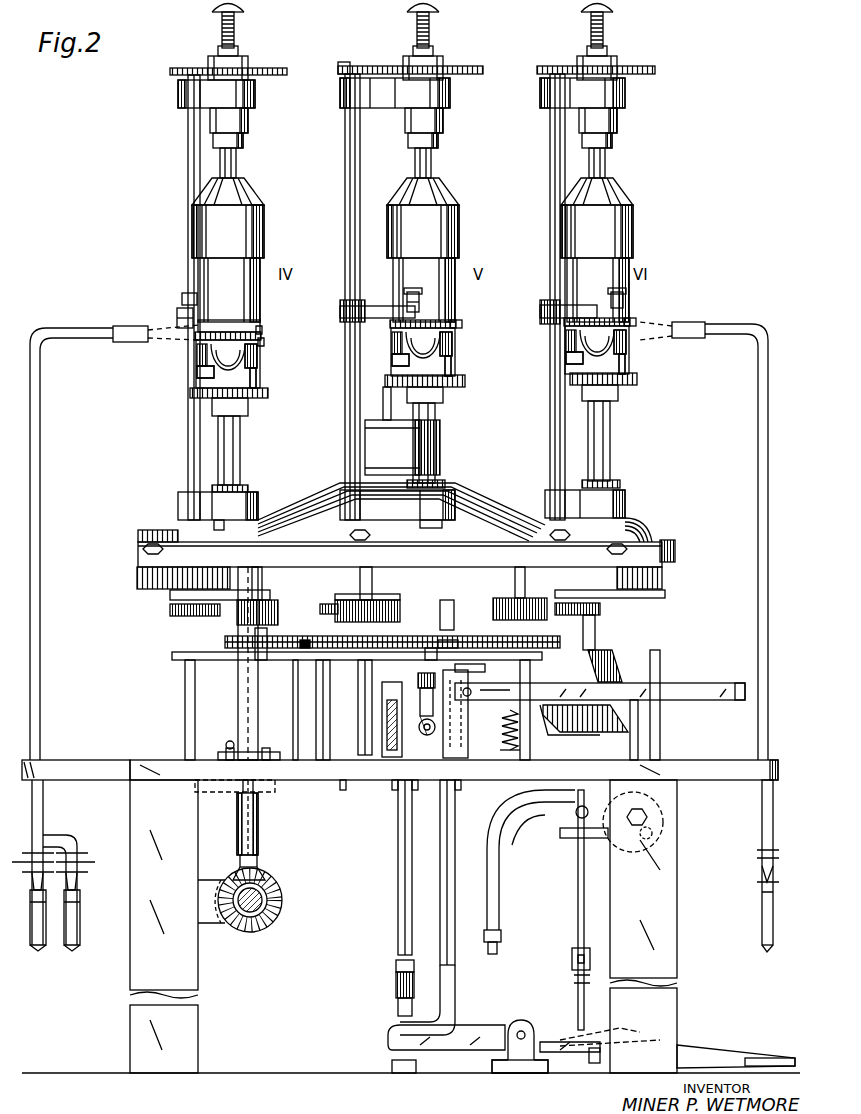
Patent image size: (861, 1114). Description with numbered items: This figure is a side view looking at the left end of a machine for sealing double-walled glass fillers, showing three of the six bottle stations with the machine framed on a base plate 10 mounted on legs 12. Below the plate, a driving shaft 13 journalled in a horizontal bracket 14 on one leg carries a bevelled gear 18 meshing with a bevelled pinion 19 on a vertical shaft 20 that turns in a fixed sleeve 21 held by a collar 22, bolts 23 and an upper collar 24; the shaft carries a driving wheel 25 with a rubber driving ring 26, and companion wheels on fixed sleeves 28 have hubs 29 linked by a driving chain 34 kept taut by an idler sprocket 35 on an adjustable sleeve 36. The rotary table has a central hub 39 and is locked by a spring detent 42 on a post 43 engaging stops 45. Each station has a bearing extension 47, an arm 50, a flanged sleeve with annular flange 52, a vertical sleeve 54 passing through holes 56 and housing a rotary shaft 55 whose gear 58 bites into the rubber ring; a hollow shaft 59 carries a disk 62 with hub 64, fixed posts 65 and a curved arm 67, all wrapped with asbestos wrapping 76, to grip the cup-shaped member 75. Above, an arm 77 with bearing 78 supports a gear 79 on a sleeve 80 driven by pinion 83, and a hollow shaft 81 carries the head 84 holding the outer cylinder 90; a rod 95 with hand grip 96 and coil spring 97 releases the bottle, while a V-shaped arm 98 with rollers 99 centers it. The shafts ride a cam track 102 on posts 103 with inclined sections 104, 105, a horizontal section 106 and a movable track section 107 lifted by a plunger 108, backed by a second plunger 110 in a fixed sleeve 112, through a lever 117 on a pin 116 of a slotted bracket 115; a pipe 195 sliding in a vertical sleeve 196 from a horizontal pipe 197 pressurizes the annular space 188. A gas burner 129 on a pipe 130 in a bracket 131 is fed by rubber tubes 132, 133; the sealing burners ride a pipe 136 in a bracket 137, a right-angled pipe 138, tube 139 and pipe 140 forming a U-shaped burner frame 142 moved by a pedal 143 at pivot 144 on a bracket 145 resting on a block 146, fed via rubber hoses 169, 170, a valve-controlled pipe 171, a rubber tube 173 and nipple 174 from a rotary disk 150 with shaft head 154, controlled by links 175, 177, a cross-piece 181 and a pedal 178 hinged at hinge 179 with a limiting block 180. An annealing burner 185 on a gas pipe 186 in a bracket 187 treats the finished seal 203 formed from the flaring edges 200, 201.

The base plate 10 is at (664, 786).
The legs 12 is at (130, 923).
The driving shaft 13 is at (262, 900).
The horizontal bracket 14 is at (212, 923).
The bevelled gear 18 is at (262, 930).
The bevelled pinion 19 is at (262, 878).
The vertical shaft 20 is at (258, 838).
The fixed sleeve 21 is at (258, 706).
The collar 22 is at (195, 788).
The bolts 23 is at (230, 742).
The collar 24 is at (218, 755).
The driving wheel 25 is at (258, 600).
The rubber driving ring 26 is at (278, 610).
The fixed sleeves 28 is at (345, 790).
The hub 29 is at (225, 638).
The driving chain 34 is at (458, 643).
The idler sprocket 35 is at (305, 650).
The sleeve 36 is at (316, 733).
The central hub 39 is at (440, 460).
The spring detent 42 is at (675, 552).
The post 43 is at (660, 740).
The stops 45 is at (140, 548).
The horizontal bearing extensions 47 is at (214, 525).
The arm 50 is at (178, 503).
The annular flange 52 is at (248, 487).
The vertical sleeve 54 is at (188, 150).
The rotary shaft 55 is at (172, 598).
The holes 56 is at (350, 537).
The gear 58 is at (170, 610).
The hollow shaft 59 is at (240, 440).
The disk 62 is at (190, 393).
The hub 64 is at (248, 408).
The fixed posts 65 is at (256, 374).
The curved arm 67 is at (197, 370).
The cup-shaped member 75 is at (210, 350).
The asbestos wrapping 76 is at (258, 355).
The arm 77 is at (178, 95).
The bearing 78 is at (248, 122).
The gear 79 is at (282, 68).
The sleeve 80 is at (243, 140).
The hollow shaft 81 is at (236, 160).
The pinion 83 is at (346, 63).
The head 84 is at (265, 214).
The outer cylinder 90 is at (260, 290).
The rod 95 is at (220, 28).
The hand grip 96 is at (242, 10).
The coil spring 97 is at (236, 38).
The V-shaped arm 98 is at (378, 306).
The rollers 99 is at (182, 298).
The cam track 102 is at (172, 656).
The posts 103 is at (185, 710).
The inclined section 104 is at (612, 665).
The inclined section 105 is at (628, 712).
The horizontal section 106 is at (590, 732).
The movable track section 107 is at (437, 652).
The plunger 108 is at (485, 668).
The second plunger 110 is at (382, 686).
The fixed sleeve 112 is at (310, 790).
The slotted bracket 115 is at (466, 758).
The pin 116 is at (535, 691).
The lever 117 is at (740, 700).
The gas burner 129 is at (128, 326).
The pipe 130 is at (40, 393).
The bracket 131 is at (106, 760).
The rubber tube 132 is at (39, 951).
The rubber tube 133 is at (72, 951).
The pipe 136 is at (455, 972).
The bracket 137 is at (458, 790).
The right-angled pipe 138 is at (383, 405).
The tube 139 is at (365, 430).
The pipe 140 is at (398, 972).
The U-shaped burner frame 142 is at (440, 893).
The pedal 143 is at (462, 1050).
The pivot 144 is at (521, 1031).
The bracket 145 is at (516, 1073).
The block 146 is at (398, 1073).
The rotary disk 150 is at (605, 850).
The head 154 is at (640, 818).
The rubber hose 169 is at (508, 795).
The rubber hose 170 is at (528, 840).
The valve-controlled pipe 171 is at (501, 922).
The rubber tube 173 is at (396, 1000).
The nipple 174 is at (398, 1012).
The link 175 is at (578, 922).
The second link 177 is at (574, 980).
The pedal 178 is at (724, 1040).
The hinge 179 is at (793, 1058).
The block 180 is at (594, 1064).
The adjustable cross-piece 181 is at (590, 955).
The burner 185 is at (690, 322).
The gas pipe 186 is at (758, 465).
The bracket 187 is at (742, 770).
The annular space 188 is at (762, 933).
The pipe 195 is at (425, 673).
The vertical sleeve 196 is at (398, 790).
The horizontal pipe 197 is at (415, 790).
The flaring edge 200 is at (264, 342).
The flaring edge 201 is at (262, 330).
The finished seal 203 is at (462, 330).